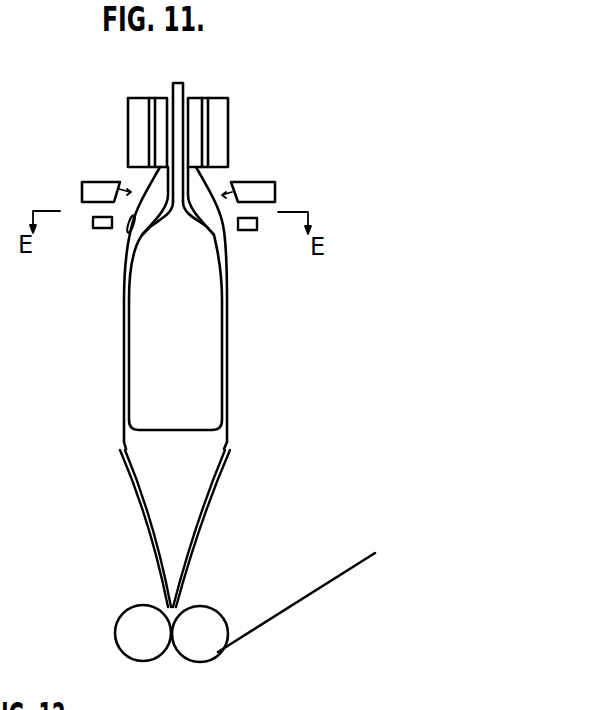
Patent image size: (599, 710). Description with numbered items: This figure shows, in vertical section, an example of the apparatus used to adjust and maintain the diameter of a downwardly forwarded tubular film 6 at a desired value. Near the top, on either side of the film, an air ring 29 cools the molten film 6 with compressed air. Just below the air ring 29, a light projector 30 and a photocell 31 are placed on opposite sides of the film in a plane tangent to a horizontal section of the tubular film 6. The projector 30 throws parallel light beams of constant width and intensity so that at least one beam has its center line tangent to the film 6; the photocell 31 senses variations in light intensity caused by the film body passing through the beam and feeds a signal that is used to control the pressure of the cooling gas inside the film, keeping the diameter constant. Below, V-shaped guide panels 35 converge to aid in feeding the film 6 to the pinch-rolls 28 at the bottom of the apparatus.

The tubular film 6 is at (128, 233).
The pinch-rolls 28 is at (208, 623).
The air ring 29 is at (88, 192).
The light projector 30 is at (93, 228).
The photocell 31 is at (248, 230).
The V-shaped guide panels 35 is at (206, 500).